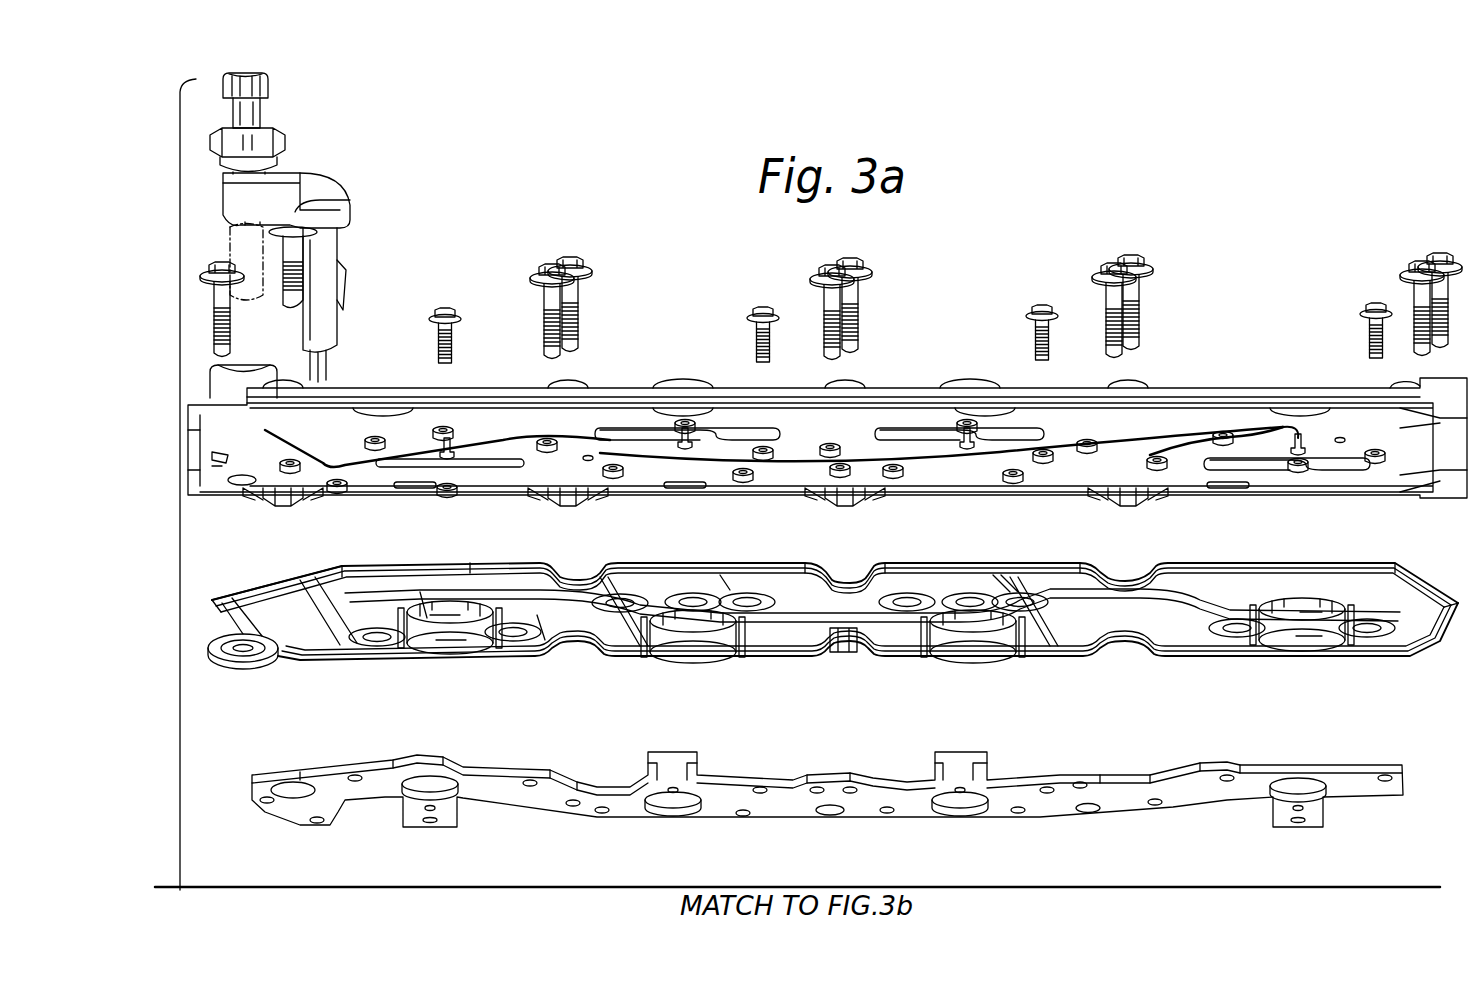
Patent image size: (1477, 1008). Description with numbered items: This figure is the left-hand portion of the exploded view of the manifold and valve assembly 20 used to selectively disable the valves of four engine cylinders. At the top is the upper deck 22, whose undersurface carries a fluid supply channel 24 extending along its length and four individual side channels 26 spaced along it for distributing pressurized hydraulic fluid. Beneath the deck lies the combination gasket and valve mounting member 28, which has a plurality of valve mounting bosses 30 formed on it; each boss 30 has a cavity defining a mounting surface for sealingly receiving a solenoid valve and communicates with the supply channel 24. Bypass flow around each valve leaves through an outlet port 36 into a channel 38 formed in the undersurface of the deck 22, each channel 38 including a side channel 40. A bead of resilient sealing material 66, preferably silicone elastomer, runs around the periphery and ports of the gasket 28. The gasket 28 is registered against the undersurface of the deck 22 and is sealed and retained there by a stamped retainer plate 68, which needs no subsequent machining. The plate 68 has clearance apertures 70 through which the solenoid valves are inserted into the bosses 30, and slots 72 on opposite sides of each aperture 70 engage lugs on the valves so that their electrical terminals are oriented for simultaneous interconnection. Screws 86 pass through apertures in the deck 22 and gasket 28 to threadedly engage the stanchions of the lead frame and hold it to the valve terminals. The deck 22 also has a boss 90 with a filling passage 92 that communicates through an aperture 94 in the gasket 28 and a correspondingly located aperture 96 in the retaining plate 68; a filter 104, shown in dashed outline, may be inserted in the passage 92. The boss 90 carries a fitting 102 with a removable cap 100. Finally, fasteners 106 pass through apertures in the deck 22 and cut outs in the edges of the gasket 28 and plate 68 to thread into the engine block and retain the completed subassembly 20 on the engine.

The manifold and valve assembly 20 is at (178, 597).
The upper deck 22 is at (1350, 385).
The fluid supply channel 24 is at (1125, 462).
The side channels 26 is at (1280, 440).
The combination gasket and valve mounting member 28 is at (258, 590).
The valve mounting bosses 30 is at (478, 630).
The outlet port 36 is at (455, 645).
The channel 38 is at (480, 465).
The side channel 40 is at (440, 452).
The bead of resilient sealing material 66 is at (290, 600).
The retainer plate 68 is at (745, 777).
The clearance apertures 70 is at (428, 800).
The slots 72 is at (408, 800).
The screws 86 is at (222, 272).
The boss 90 is at (245, 372).
The filling passage 92 is at (240, 482).
The aperture 94 is at (248, 662).
The aperture 96 is at (290, 785).
The removable cap 100 is at (268, 90).
The fitting 102 is at (287, 145).
The filter 104 is at (255, 255).
The fasteners 106 is at (430, 340).